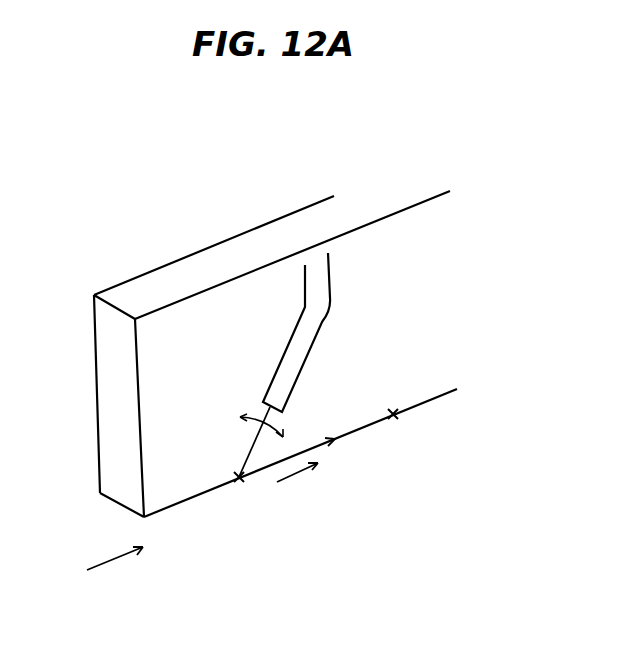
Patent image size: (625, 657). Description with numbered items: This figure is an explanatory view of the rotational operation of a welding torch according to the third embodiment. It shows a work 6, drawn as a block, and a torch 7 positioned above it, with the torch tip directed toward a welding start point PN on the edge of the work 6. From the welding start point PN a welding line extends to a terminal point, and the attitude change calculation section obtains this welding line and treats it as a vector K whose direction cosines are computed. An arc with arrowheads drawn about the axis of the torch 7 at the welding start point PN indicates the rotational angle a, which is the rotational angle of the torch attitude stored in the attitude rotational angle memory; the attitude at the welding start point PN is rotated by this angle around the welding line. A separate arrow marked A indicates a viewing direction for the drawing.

The work 6 is at (103, 387).
The torch 7 is at (312, 328).
The rotational angle a is at (262, 421).
The welding start point PN is at (241, 497).
The welding line direction vector K is at (297, 484).
The viewing direction A is at (103, 570).